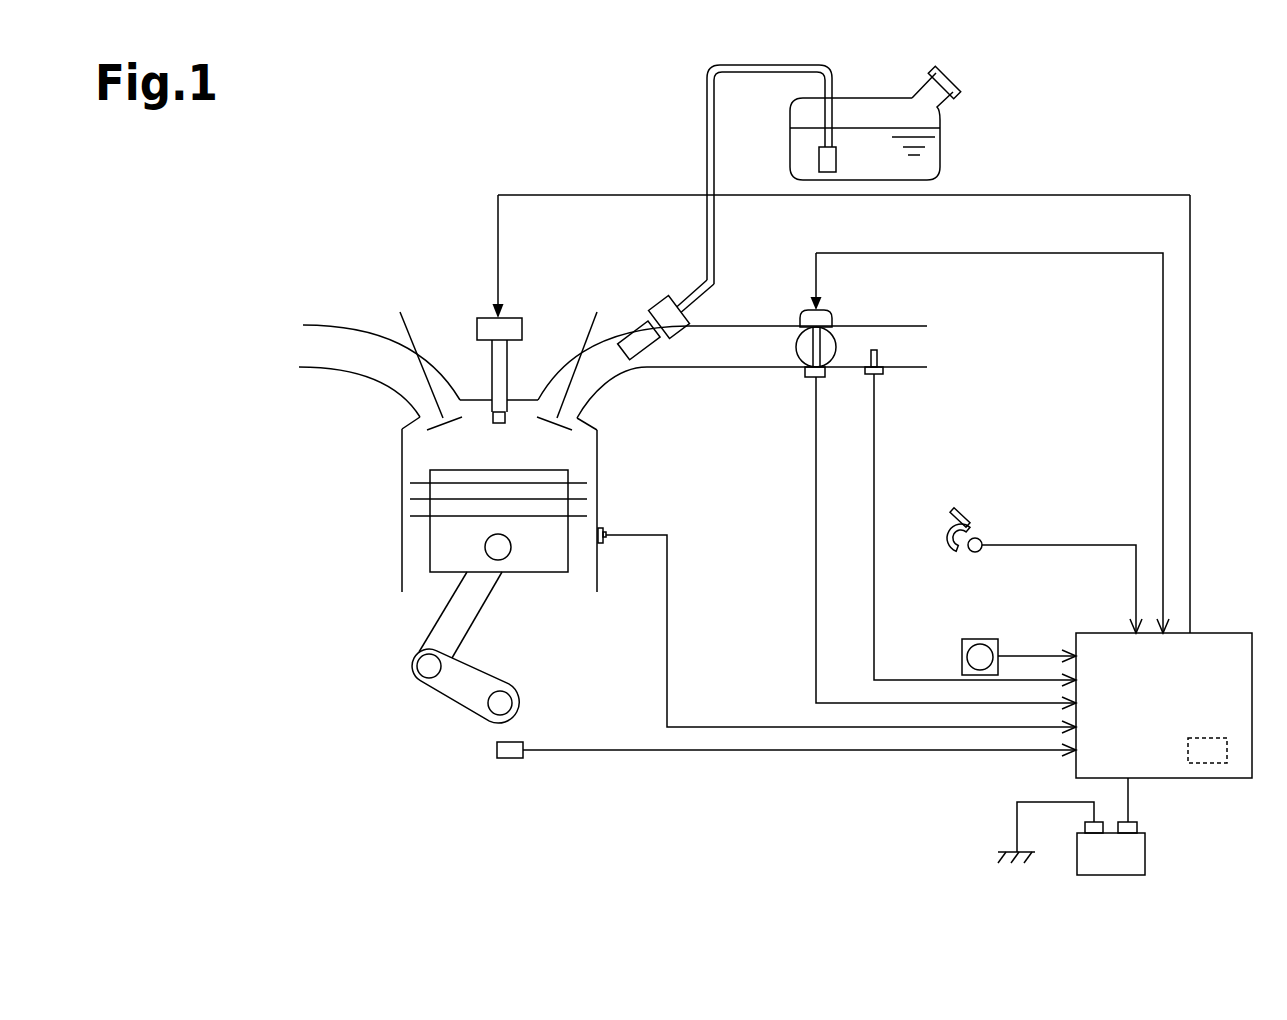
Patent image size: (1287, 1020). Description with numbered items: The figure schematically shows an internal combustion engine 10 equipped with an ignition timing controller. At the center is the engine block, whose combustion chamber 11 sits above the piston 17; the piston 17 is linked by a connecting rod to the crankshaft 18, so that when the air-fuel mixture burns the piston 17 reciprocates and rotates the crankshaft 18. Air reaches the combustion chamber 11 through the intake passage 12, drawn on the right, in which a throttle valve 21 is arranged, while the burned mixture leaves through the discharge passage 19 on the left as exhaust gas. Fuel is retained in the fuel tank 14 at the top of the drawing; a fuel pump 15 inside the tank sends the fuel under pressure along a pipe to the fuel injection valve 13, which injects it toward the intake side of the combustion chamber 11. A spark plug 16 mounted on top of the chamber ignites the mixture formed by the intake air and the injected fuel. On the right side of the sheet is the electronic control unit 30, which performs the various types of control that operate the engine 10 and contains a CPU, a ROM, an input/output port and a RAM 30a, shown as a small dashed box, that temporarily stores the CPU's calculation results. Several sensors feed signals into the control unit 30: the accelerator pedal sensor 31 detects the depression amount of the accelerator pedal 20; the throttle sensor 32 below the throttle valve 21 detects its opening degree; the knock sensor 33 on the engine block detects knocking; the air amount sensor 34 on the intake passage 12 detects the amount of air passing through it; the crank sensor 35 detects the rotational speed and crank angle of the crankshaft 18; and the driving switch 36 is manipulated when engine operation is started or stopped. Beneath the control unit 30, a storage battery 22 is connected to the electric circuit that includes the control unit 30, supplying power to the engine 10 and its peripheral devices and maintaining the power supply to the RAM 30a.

The internal combustion engine 10 is at (360, 165).
The combustion chamber 11 is at (402, 452).
The intake passage 12 is at (710, 368).
The fuel injection valve 13 is at (689, 318).
The fuel tank 14 is at (940, 152).
The fuel pump 15 is at (836, 160).
The spark plug 16 is at (492, 354).
The piston 17 is at (520, 573).
The crankshaft 18 is at (512, 703).
The discharge passage 19 is at (318, 367).
The accelerator pedal 20 is at (952, 512).
The throttle valve 21 is at (837, 345).
The storage battery 22 is at (1145, 855).
The electronic control unit 30 is at (1097, 632).
The RAM 30a is at (1187, 752).
The accelerator pedal sensor 31 is at (980, 537).
The throttle sensor 32 is at (822, 380).
The knock sensor 33 is at (600, 545).
The air amount sensor 34 is at (875, 378).
The crank sensor 35 is at (496, 750).
The driving switch 36 is at (978, 638).